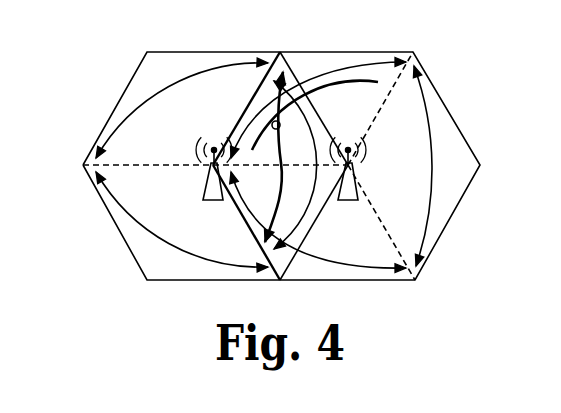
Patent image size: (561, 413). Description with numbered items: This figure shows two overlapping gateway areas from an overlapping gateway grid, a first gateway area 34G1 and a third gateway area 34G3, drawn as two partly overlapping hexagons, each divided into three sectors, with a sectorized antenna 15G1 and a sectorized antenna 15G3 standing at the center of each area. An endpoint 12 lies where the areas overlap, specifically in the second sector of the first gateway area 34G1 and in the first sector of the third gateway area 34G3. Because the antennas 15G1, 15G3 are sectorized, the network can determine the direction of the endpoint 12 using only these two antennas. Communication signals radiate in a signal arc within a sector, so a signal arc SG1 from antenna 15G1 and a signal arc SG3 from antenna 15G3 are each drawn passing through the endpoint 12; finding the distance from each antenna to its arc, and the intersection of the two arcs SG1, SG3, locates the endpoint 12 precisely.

The first gateway area 34G1 is at (118, 100).
The third gateway area 34G3 is at (443, 101).
The endpoint 12 is at (271, 121).
The antenna 15G1 is at (204, 185).
The antenna 15G3 is at (358, 185).
The signal arc SG1 is at (264, 236).
The signal arc SG3 is at (346, 88).